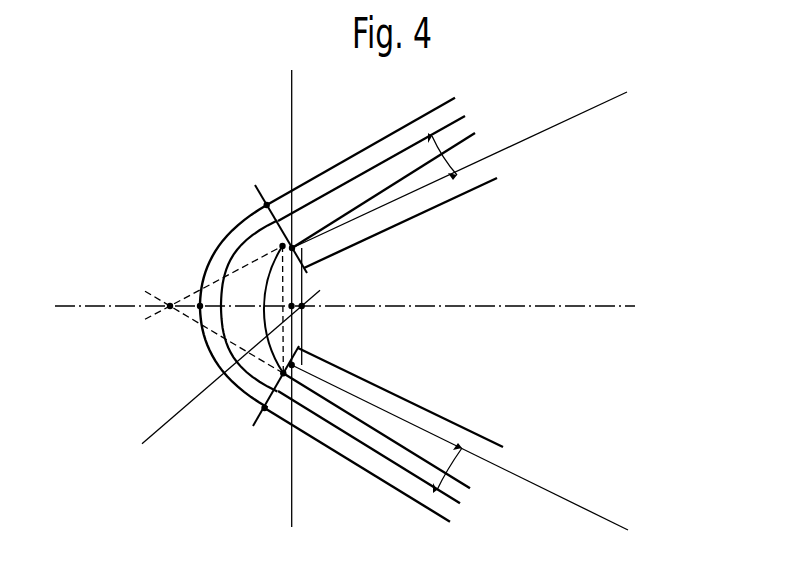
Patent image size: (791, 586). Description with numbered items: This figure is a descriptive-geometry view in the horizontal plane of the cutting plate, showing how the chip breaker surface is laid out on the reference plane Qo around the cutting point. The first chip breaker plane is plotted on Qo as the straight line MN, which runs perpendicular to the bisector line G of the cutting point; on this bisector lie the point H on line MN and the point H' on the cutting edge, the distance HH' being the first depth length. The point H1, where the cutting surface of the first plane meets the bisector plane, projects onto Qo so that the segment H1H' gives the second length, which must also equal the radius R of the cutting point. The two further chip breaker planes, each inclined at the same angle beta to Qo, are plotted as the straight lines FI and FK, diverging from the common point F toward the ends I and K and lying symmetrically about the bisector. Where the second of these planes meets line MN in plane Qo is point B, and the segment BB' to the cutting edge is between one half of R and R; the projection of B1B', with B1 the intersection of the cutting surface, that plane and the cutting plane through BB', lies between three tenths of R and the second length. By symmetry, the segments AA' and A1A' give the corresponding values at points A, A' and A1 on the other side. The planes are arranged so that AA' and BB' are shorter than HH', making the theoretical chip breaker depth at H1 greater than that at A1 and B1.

The end point of plot line MN M is at (292, 177).
The end point of plot line MN N is at (290, 430).
The bisector line of the cutting point G is at (356, 309).
The origin point of plots FI and FK F is at (214, 309).
The point on the cutting edge H' is at (192, 314).
The intersection point of cutting surface plane P1 and bisector plane H1 is at (282, 298).
The point on plot line MN on the bisector H is at (302, 306).
The point on the cutting edge A' is at (327, 253).
The intersection point of cutting surface with plane P'2 A1 is at (272, 305).
The intersection point of plane P'2 and MN in plane Qo A is at (382, 194).
The point on the cutting edge B' is at (351, 434).
The intersection point of cutting surface with plane P"2 B1 is at (363, 425).
The intersection point of plane P"2 and MN in plane Qo B is at (298, 366).
The end point of plot line FI I is at (467, 156).
The end point of plot line FK K is at (471, 457).
The radius of the cutting point R is at (222, 377).